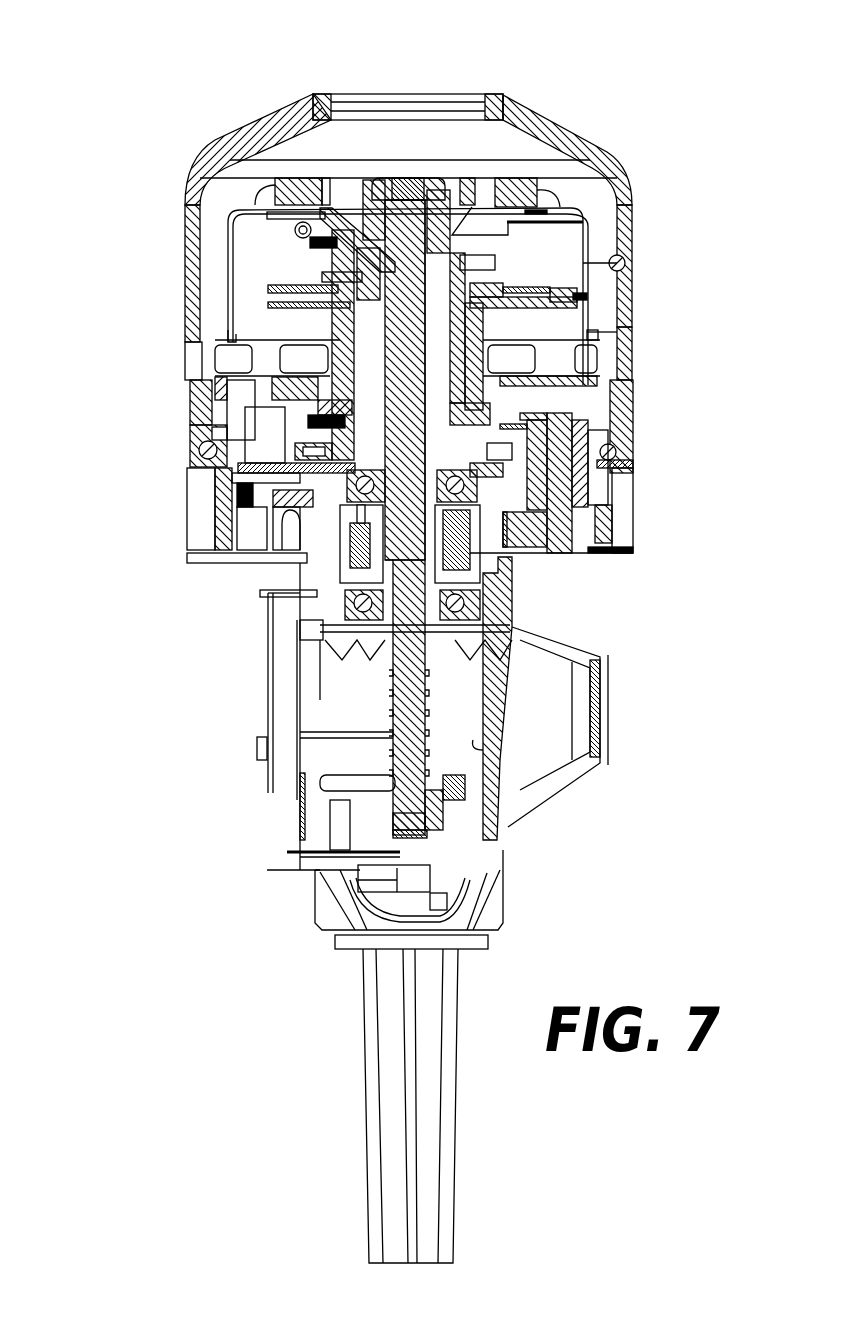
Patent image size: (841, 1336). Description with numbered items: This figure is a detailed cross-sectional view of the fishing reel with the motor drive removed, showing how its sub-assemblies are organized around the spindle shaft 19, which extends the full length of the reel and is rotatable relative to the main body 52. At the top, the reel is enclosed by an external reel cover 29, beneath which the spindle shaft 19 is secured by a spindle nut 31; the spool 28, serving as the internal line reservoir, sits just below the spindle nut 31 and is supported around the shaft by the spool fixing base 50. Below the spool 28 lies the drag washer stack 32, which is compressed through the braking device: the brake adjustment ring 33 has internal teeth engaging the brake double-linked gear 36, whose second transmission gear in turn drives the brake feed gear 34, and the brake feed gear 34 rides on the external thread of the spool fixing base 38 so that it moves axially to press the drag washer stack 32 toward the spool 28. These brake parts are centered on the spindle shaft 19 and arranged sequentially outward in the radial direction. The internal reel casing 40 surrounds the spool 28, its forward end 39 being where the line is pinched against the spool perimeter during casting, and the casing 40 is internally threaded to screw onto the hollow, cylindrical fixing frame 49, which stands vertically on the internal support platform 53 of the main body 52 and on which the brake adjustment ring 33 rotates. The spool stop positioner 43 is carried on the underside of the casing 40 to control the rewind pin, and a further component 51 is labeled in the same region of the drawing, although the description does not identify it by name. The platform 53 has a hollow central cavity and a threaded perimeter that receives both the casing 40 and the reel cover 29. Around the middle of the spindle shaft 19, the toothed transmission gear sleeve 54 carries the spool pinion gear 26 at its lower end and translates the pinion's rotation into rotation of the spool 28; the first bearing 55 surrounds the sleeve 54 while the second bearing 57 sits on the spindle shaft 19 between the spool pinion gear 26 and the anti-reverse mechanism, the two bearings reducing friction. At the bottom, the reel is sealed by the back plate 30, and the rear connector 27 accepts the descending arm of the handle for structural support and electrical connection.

The spindle shaft 19 is at (405, 705).
The spool pinion gear 26 is at (458, 635).
The rear connector 27 is at (362, 982).
The spool 28 is at (483, 380).
The reel cover 29 is at (565, 133).
The back plate 30 is at (334, 943).
The spindle nut 31 is at (452, 212).
The drag washer stack 32 is at (520, 408).
The brake adjustment ring 33 is at (205, 490).
The brake feed gear 34 is at (510, 437).
The brake double-linked gear 36 is at (597, 552).
The spool fixing base 38 is at (357, 307).
The forward end 39 is at (300, 187).
The reel casing 40 is at (612, 203).
The spool stop positioner 43 is at (343, 262).
The fixing frame 49 is at (218, 520).
The spool fixing base 50 is at (350, 350).
The flange 51 is at (350, 447).
The main body 52 is at (508, 848).
The internal support platform 53 is at (295, 553).
The toothed transmission gear sleeve 54 is at (355, 578).
The first bearing 55 is at (345, 497).
The second bearing 57 is at (355, 612).